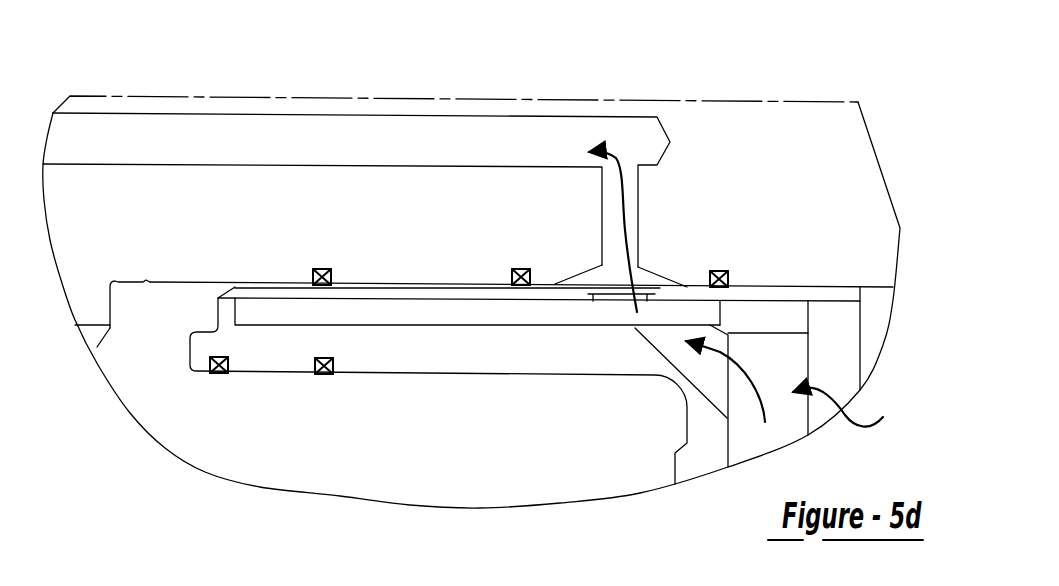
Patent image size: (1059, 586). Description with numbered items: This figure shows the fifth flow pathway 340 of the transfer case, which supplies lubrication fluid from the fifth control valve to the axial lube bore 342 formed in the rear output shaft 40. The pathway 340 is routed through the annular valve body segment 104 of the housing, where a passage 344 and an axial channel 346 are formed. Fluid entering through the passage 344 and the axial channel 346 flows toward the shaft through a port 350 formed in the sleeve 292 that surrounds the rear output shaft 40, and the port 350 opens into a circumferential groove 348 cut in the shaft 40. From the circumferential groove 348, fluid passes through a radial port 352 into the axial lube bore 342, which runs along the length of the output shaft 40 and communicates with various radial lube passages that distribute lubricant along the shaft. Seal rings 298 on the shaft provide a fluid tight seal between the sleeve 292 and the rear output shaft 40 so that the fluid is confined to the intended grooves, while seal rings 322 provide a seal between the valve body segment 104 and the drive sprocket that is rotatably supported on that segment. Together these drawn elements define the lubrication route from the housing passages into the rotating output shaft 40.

The rear output shaft 40 is at (815, 130).
The axial lube bore 342 is at (367, 165).
The radial port 352 is at (630, 188).
The circumferential groove 348 is at (647, 277).
The sleeve 292 is at (795, 293).
The seal rings 298 is at (320, 269).
The seal rings 322 is at (217, 375).
The axial channel 346 is at (462, 327).
The valve body segment 104 is at (497, 348).
The port 350 is at (595, 294).
The passage 344 is at (690, 380).
The fifth flow pathway 340 is at (857, 407).